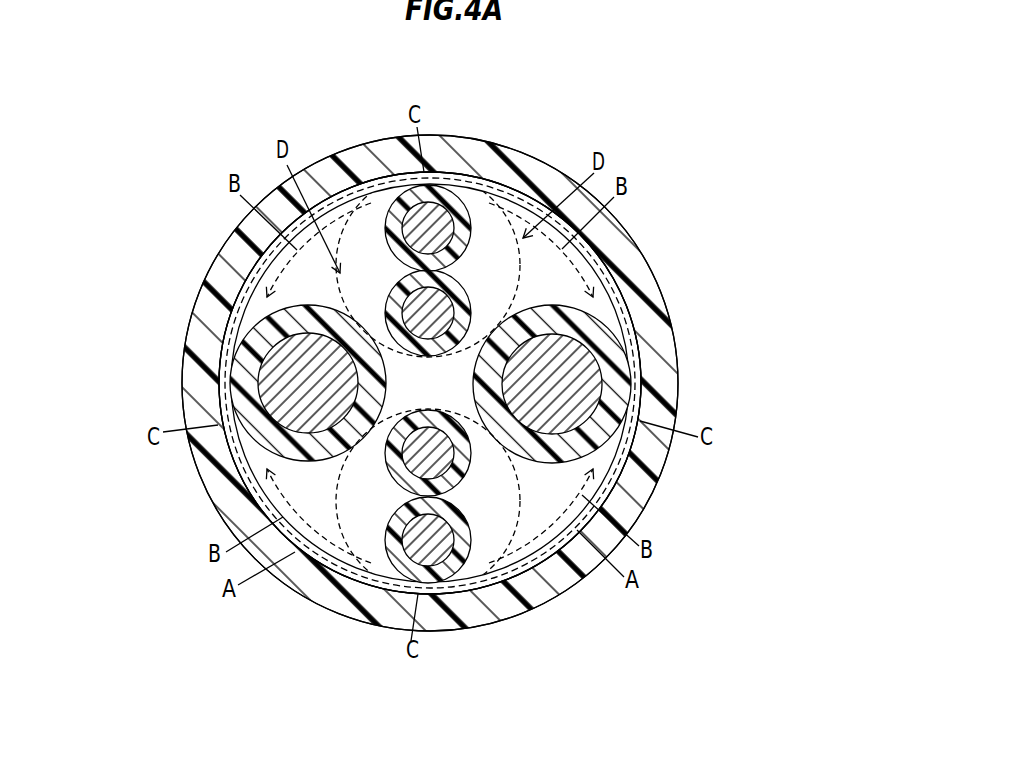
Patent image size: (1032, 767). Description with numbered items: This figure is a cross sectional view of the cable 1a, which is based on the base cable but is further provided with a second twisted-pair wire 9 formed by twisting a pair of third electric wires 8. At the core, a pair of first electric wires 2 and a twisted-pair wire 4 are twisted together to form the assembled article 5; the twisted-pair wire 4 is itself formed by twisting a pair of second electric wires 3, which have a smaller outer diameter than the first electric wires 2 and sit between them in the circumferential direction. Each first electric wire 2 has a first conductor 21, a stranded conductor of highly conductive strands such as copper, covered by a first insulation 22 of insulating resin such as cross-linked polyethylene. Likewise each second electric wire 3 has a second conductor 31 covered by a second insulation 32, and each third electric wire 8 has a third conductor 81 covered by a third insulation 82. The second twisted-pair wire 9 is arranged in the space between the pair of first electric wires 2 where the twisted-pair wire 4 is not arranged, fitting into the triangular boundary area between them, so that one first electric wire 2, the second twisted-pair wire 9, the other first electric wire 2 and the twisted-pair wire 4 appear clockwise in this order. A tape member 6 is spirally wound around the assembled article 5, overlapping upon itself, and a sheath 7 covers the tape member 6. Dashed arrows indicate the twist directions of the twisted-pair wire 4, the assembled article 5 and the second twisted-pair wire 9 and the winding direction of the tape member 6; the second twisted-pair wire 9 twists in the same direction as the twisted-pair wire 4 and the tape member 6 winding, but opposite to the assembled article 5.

The cable 1a is at (467, 370).
The first electric wire 2 is at (528, 338).
The first conductor 21 is at (585, 369).
The first insulation 22 is at (624, 382).
The second electric wire 3 is at (589, 582).
The second conductor 31 is at (452, 548).
The second insulation 32 is at (462, 573).
The twisted-pair wire 4 is at (482, 545).
The assembled article 5 is at (513, 370).
The tape member 6 is at (618, 470).
The sheath 7 is at (655, 300).
The third electric wire 8 is at (573, 176).
The third conductor 81 is at (437, 207).
The third insulation 82 is at (455, 204).
The second twisted-pair wire 9 is at (483, 208).